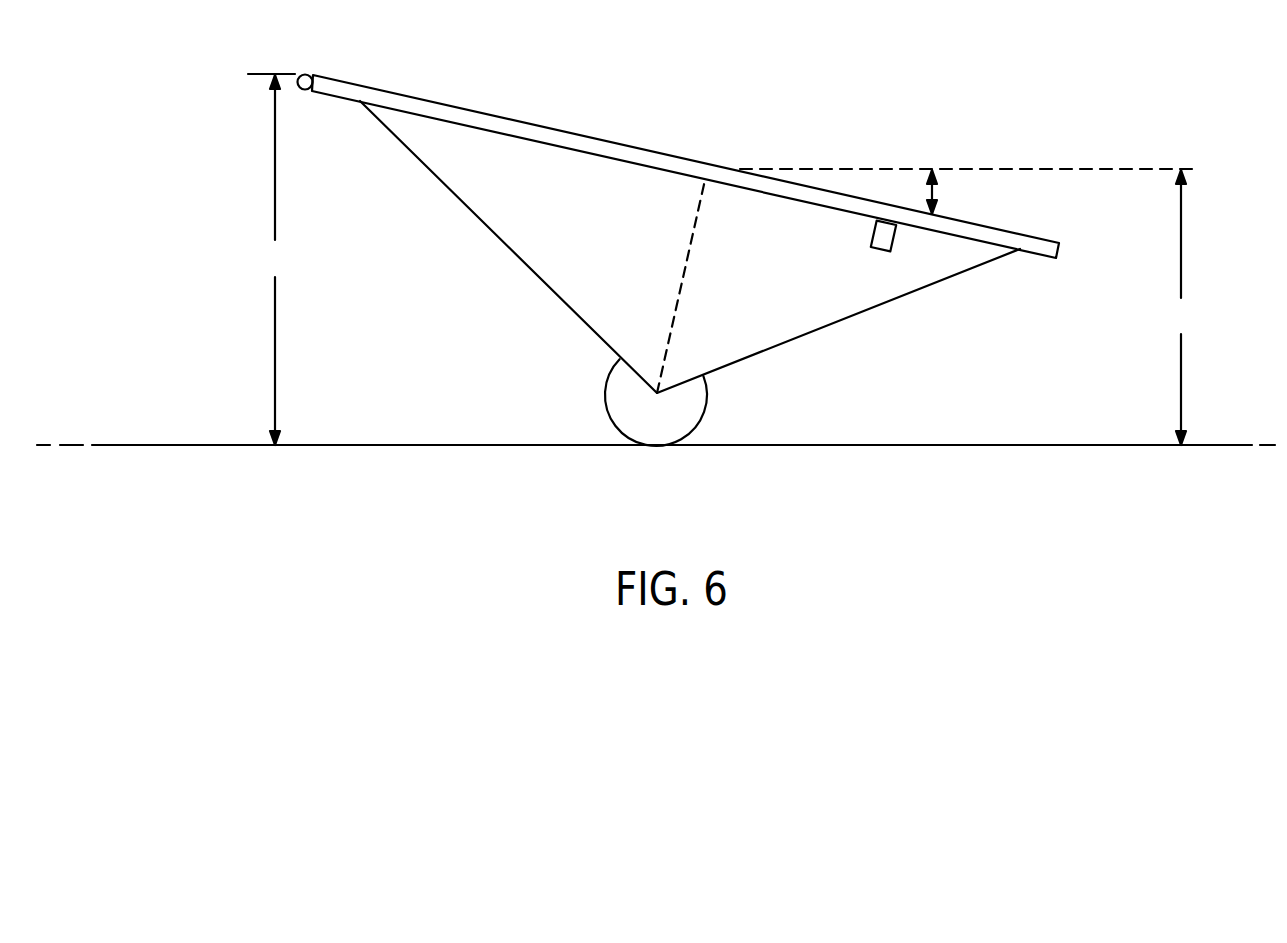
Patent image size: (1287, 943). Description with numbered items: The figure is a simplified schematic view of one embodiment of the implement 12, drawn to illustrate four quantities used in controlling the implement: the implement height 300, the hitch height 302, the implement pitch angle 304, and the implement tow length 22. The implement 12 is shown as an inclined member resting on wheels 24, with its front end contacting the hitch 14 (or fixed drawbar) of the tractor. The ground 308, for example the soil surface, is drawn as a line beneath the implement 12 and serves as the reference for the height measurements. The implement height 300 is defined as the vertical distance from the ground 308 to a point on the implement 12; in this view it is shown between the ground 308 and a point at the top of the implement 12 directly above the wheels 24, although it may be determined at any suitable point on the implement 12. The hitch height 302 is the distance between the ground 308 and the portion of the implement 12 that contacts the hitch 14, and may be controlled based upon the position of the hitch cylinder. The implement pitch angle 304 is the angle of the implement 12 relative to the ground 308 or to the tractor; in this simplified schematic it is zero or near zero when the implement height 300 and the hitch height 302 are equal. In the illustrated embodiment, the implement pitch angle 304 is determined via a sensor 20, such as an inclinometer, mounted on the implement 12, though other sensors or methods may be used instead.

The implement 12 is at (768, 77).
The hitch 14 is at (303, 75).
The sensor 20 is at (880, 251).
The implement tow length 22 is at (712, 151).
The wheels 24 is at (705, 408).
The implement height 300 is at (971, 307).
The hitch height 302 is at (271, 259).
The implement pitch angle 304 is at (937, 192).
The ground 308 is at (877, 446).